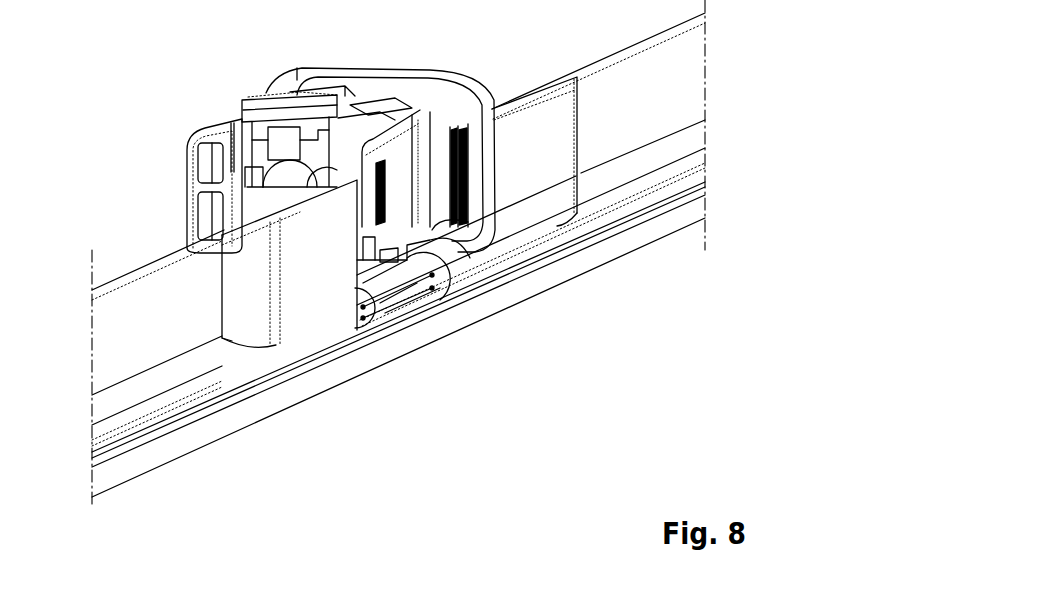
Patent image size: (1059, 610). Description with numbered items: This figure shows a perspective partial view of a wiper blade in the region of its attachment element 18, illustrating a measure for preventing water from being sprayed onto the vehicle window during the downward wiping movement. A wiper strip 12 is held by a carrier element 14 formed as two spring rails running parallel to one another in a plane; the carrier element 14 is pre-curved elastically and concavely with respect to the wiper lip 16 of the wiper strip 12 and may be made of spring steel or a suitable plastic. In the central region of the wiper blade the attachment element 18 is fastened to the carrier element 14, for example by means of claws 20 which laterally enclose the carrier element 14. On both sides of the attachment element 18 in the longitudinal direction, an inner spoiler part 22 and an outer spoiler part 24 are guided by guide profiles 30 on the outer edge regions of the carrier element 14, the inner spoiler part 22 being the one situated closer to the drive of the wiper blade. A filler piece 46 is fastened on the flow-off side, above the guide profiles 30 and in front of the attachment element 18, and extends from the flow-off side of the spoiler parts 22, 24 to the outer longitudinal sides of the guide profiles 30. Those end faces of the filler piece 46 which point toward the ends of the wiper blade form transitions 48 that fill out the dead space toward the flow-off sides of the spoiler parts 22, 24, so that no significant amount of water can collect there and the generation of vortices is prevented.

The wiper strip 12 is at (392, 284).
The carrier element 14 is at (400, 285).
The wiper lip 16 is at (262, 410).
The attachment element 18 is at (229, 79).
The claws 20 is at (373, 318).
The inner spoiler part 22 is at (165, 262).
The outer spoiler part 24 is at (641, 50).
The guide profiles 30 is at (148, 383).
The filler piece 46 is at (322, 310).
The transitions 48 is at (281, 318).